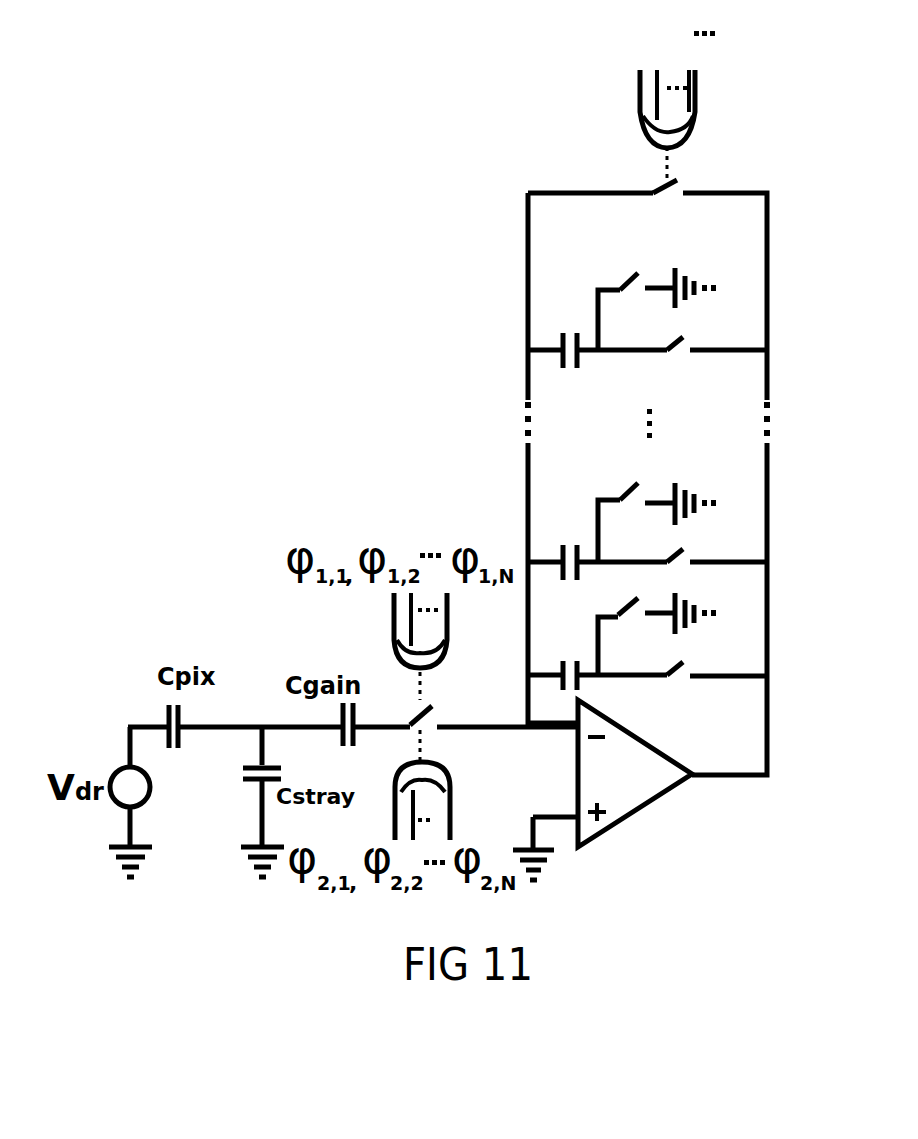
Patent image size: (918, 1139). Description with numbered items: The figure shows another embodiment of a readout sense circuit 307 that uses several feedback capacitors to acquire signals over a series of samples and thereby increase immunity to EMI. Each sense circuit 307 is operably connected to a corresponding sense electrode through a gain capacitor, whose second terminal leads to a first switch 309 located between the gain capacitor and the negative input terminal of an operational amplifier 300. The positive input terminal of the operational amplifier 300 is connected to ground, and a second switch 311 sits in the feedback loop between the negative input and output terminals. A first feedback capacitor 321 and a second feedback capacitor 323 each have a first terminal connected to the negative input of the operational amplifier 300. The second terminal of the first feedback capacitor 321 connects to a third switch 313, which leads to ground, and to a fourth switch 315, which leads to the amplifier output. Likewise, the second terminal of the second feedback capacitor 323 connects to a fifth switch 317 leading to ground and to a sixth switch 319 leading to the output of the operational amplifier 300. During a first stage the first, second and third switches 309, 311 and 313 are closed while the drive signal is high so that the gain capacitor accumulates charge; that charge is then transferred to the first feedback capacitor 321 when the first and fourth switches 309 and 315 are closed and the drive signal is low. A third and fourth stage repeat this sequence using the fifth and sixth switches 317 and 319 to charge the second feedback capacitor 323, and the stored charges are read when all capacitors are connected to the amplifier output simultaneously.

The operational amplifier 300 is at (653, 800).
The sense circuit 307 is at (258, 350).
The first switch 309 is at (417, 717).
The second switch 311 is at (665, 184).
The third switch 313 is at (627, 607).
The fourth switch 315 is at (677, 670).
The fifth switch 317 is at (637, 490).
The sixth switch 319 is at (680, 549).
The first feedback capacitor 321 is at (563, 692).
The second feedback capacitor 323 is at (563, 547).